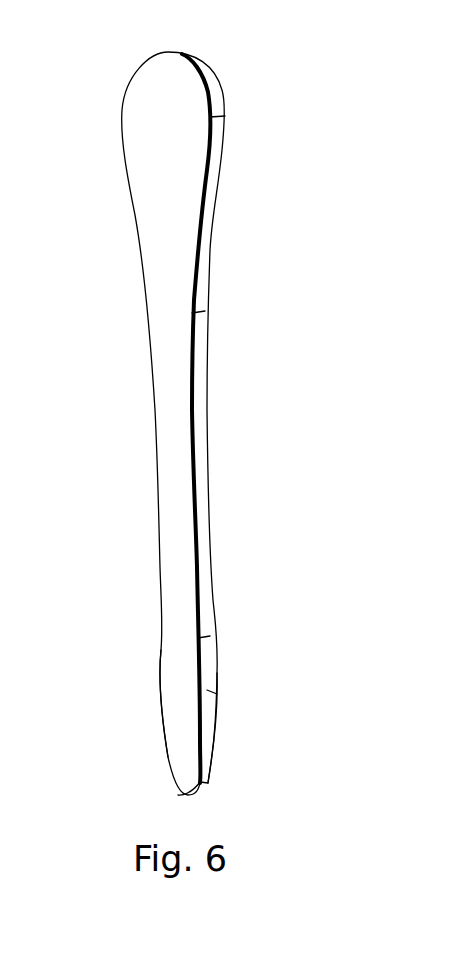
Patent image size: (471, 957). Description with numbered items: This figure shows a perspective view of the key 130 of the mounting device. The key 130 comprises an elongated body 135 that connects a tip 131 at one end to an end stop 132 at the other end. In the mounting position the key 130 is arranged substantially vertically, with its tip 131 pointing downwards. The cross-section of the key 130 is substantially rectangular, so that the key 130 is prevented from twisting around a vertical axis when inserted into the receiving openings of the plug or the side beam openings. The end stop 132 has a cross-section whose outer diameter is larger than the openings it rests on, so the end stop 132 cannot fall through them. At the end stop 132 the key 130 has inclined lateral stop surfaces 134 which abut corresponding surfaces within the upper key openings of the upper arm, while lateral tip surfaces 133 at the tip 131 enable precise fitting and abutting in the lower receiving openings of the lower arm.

The key 130 is at (328, 187).
The tip 131 is at (190, 783).
The end stop 132 is at (180, 80).
The lateral tip surfaces 133 is at (158, 749).
The lateral stop surfaces 134 is at (205, 163).
The elongated body 135 is at (173, 500).